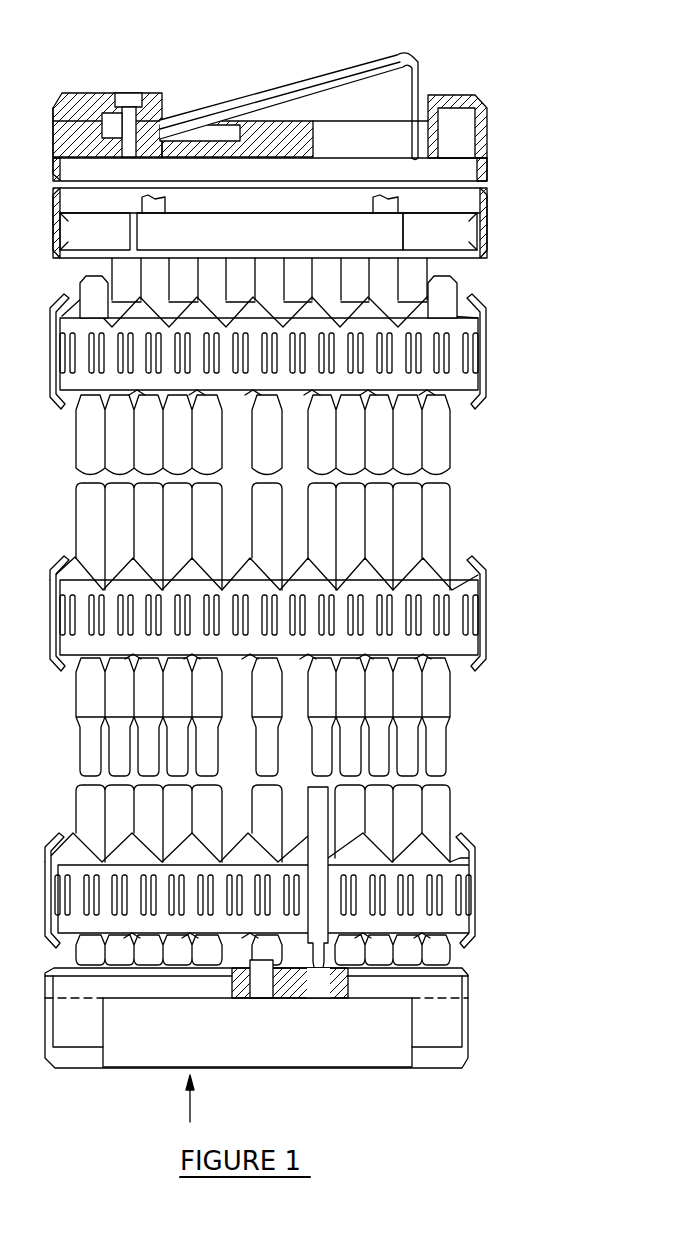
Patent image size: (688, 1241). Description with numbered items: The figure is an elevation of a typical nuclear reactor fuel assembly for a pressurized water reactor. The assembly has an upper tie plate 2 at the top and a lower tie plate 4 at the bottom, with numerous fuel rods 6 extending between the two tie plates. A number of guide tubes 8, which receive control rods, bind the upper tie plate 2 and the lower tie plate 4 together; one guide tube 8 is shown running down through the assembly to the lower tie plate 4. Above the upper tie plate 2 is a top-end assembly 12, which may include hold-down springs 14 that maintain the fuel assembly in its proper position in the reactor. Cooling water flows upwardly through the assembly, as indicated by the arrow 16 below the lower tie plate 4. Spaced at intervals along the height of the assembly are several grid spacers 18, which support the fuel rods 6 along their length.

The upper tie plate 2 is at (487, 238).
The lower tie plate 4 is at (468, 1010).
The fuel rods 6 is at (444, 505).
The guide tubes 8 is at (323, 960).
The top-end assembly 12 is at (488, 120).
The hold-down springs 14 is at (337, 68).
The arrow 16 is at (192, 1102).
The grid spacers 18 is at (445, 858).